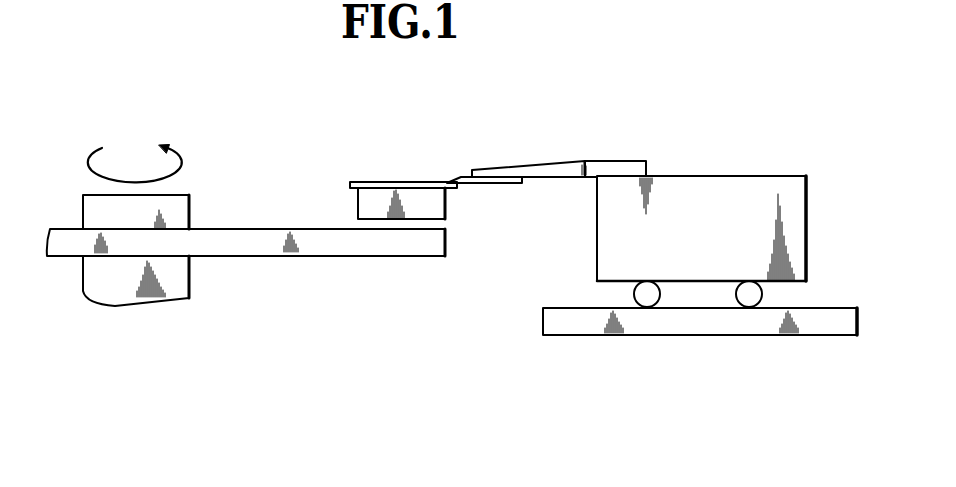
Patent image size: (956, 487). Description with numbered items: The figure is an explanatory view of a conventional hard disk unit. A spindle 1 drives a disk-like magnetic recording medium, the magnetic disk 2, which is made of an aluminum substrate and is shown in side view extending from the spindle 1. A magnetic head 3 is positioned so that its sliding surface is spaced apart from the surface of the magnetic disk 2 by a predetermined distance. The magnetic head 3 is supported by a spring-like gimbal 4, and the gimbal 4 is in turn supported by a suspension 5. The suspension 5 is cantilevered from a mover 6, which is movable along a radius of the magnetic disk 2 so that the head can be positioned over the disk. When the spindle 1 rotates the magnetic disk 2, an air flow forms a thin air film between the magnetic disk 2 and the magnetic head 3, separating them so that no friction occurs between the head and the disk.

The spindle 1 is at (190, 210).
The magnetic disk 2 is at (323, 256).
The magnetic head 3 is at (363, 182).
The gimbal 4 is at (453, 178).
The suspension 5 is at (538, 161).
The mover 6 is at (806, 213).